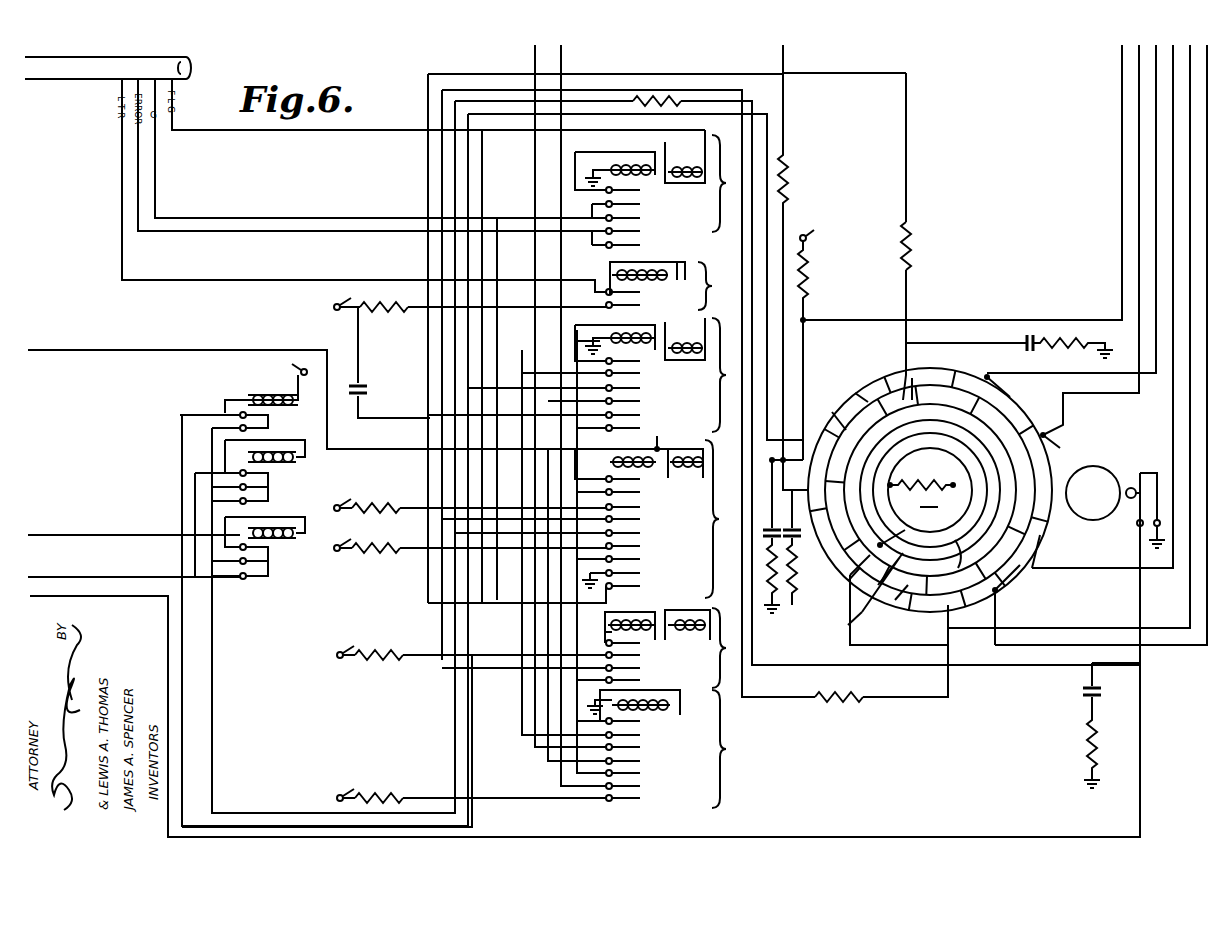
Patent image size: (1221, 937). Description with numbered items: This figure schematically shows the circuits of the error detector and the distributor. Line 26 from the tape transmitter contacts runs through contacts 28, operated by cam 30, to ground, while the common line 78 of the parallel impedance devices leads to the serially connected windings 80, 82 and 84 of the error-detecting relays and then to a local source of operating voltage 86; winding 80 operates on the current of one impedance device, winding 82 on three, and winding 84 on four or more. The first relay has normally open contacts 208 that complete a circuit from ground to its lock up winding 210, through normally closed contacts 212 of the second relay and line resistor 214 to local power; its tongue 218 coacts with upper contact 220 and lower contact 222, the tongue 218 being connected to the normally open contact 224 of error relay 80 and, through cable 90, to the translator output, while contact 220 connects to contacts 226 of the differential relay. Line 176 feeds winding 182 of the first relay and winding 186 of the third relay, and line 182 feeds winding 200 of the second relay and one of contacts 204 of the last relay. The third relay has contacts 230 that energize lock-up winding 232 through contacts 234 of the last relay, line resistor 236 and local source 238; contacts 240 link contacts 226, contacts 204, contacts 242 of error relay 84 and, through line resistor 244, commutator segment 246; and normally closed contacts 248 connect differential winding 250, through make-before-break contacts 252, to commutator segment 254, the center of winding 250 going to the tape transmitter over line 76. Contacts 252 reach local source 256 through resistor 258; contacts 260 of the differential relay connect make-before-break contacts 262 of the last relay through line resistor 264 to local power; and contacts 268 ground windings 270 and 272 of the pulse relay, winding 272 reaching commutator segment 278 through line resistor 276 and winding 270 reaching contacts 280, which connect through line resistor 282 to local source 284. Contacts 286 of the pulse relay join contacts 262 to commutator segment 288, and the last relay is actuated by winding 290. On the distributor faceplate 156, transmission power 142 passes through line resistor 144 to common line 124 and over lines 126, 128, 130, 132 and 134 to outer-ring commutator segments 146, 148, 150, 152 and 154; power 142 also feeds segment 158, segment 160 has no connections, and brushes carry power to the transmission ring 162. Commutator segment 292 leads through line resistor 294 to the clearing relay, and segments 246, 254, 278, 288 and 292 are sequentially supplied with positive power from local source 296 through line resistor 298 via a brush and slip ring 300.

The cable 90 is at (78, 82).
The line 76 is at (58, 340).
The common line 78 is at (44, 536).
The line 26 is at (45, 592).
The winding of error-detecting relay 84 is at (254, 399).
The local source of operating voltage 86 is at (300, 372).
The contacts of error relay 84 242 is at (268, 422).
The winding of error-detecting relay 82 is at (291, 462).
The winding of error-detecting relay 80 is at (288, 552).
The normally open contact of error relay 80 224 is at (290, 576).
The lock up winding of relay FF 210 is at (333, 303).
The line resistor 214 is at (380, 300).
The local source of power 256 is at (338, 498).
The resistor 258 is at (374, 506).
The normally open contacts of relay TTS 260 is at (656, 549).
The line resistor 264 is at (381, 552).
The local source of power 284 is at (336, 643).
The line resistor 282 is at (379, 652).
The local source of power 238 is at (337, 785).
The line resistor 236 is at (392, 797).
The winding of relay FF 182 is at (533, 60).
The line 176 is at (563, 60).
The line resistor 244 is at (655, 98).
The normally open contacts of relay FF 208 is at (640, 207).
The normally open upper contact 220 is at (642, 220).
The tongue 218 is at (640, 232).
The normally closed lower contact 222 is at (633, 244).
The winding of relay LL 200 is at (682, 264).
The normally closed contacts of relay LL 212 is at (640, 301).
The lock-up winding of relay EE 232 is at (575, 341).
The winding of relay EE 186 is at (689, 334).
The normally open contacts of relay EE 230 is at (640, 373).
The normally open contacts of relay EE 240 is at (640, 387).
The normally closed contacts of relay EE 248 is at (640, 421).
The differentially connected relay winding of relay TTS 250 is at (650, 491).
The make-before-break contacts of relay TTS 252 is at (640, 512).
The normally open contacts of relay TTS 226 is at (640, 527).
The normally open contacts of relay TTS 268 is at (640, 576).
The winding of relay PP 270 is at (613, 628).
The normally open contacts of relay PP 280 is at (640, 645).
The winding of relay PP 272 is at (700, 645).
The normally open contacts of relay PP 286 is at (640, 670).
The winding of relay NN 290 is at (665, 715).
The make-before-break contacts of relay NN 262 is at (640, 746).
The normally open contacts of relay NN 204 is at (640, 762).
The normally closed contacts of relay NN 234 is at (640, 799).
The line resistor 294 is at (789, 180).
The line resistor 276 is at (912, 254).
The source of transmission power 142 is at (808, 238).
The line resistor 144 is at (809, 282).
The common line 124 is at (1122, 52).
The line 126 is at (1139, 68).
The line 128 is at (1156, 86).
The line 130 is at (1173, 100).
The line 132 is at (1190, 118).
The line 134 is at (1207, 148).
The cam 30 is at (1102, 478).
The contacts 28 is at (1157, 464).
The commutator segment 246 is at (832, 560).
The distributor faceplate 156 is at (888, 364).
The line resistor 298 is at (945, 470).
The local source 296 is at (943, 510).
The commutator segment 292 is at (905, 530).
The slip ring 300 is at (947, 554).
The commutator segment 278 is at (914, 398).
The commutator segment 160 is at (848, 386).
The commutator segment 158 is at (827, 412).
The commutator segment 146 is at (1013, 389).
The commutator segment 148 is at (1063, 437).
The commutator segment 150 is at (1080, 556).
The commutator segment 254 is at (1086, 560).
The commutator segment 154 is at (850, 595).
The commutator segment 152 is at (895, 600).
The transmission ring 162 is at (835, 628).
The commutator segment 288 is at (1035, 590).